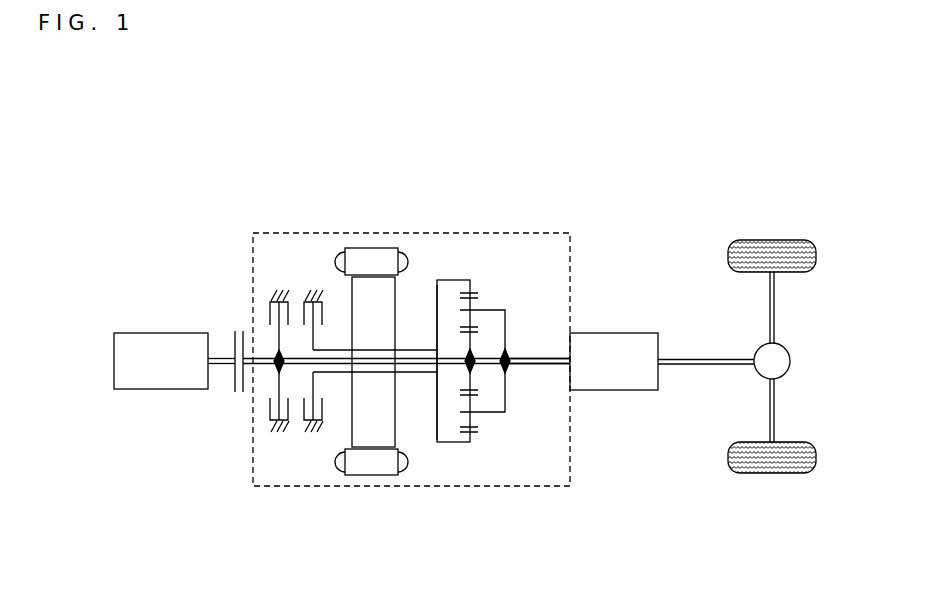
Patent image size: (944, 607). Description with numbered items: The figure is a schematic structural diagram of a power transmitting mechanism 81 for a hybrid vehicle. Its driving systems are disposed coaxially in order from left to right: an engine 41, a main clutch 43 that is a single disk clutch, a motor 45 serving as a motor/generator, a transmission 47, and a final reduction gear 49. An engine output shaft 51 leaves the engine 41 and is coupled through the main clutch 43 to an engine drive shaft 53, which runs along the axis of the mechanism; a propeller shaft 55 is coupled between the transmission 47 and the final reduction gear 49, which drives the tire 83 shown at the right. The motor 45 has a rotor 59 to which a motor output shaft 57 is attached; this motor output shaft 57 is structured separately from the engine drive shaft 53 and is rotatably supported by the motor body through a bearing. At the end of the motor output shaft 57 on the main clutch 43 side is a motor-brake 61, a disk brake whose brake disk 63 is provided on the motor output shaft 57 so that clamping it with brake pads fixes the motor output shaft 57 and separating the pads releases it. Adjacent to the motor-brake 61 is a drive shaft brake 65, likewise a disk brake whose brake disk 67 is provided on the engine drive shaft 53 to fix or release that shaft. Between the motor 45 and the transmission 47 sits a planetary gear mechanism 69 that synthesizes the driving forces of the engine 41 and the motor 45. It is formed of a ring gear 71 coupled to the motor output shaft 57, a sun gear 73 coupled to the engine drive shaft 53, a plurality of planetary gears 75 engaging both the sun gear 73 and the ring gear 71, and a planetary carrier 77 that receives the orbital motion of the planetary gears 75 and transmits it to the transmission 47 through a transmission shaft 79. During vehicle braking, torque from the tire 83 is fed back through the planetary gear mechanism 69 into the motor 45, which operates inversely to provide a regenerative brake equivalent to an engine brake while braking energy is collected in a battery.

The engine 41 is at (158, 347).
The main clutch 43 is at (234, 330).
The motor 45 is at (366, 249).
The transmission 47 is at (620, 343).
The final reduction gear 49 is at (777, 360).
The engine output shaft 51 is at (225, 367).
The engine drive shaft 53 is at (413, 365).
The propeller shaft 55 is at (690, 361).
The motor output shaft 57 is at (367, 376).
The rotor 59 is at (387, 302).
The motor-brake 61 is at (313, 299).
The brake disk 63 is at (298, 428).
The drive shaft brake 65 is at (271, 299).
The brake disk 67 is at (263, 413).
The planetary gear mechanism 69 is at (472, 271).
The ring gear 71 is at (431, 303).
The sun gear 73 is at (472, 380).
The planetary gears 75 is at (480, 300).
The planetary carrier 77 is at (508, 323).
The transmission shaft 79 is at (540, 365).
The power transmitting mechanism 81 is at (361, 117).
The tire 83 is at (760, 252).